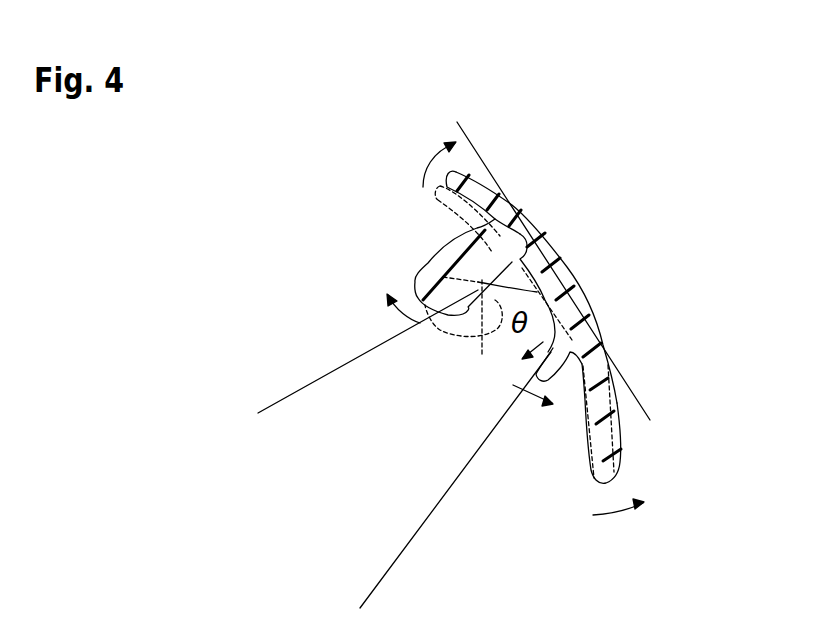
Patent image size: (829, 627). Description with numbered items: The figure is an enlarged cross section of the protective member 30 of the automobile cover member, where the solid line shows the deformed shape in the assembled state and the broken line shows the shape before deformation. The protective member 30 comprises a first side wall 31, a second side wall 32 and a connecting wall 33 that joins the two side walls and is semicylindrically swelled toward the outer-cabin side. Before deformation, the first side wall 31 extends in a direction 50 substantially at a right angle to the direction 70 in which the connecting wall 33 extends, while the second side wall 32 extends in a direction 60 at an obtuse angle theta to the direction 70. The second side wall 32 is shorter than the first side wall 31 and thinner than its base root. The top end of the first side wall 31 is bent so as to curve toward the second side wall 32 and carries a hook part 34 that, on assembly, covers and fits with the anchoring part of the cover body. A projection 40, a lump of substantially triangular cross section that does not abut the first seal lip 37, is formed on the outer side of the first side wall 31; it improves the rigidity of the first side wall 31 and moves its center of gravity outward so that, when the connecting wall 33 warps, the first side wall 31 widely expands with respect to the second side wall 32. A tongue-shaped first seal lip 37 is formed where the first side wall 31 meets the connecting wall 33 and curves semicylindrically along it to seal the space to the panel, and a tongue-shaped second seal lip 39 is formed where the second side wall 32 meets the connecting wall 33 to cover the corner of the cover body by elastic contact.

The protective member 30 is at (539, 331).
The first side wall 31 is at (483, 325).
The second side wall 32 is at (560, 390).
The connecting wall 33 is at (585, 277).
The hook part 34 is at (448, 322).
The first seal lip 37 is at (490, 182).
The second seal lip 39 is at (623, 430).
The projection 40 is at (485, 228).
The direction in which the first side wall extends 50 is at (309, 384).
The direction in which the second side wall extends 60 is at (410, 538).
The direction in which the connecting wall extends 70 is at (472, 140).